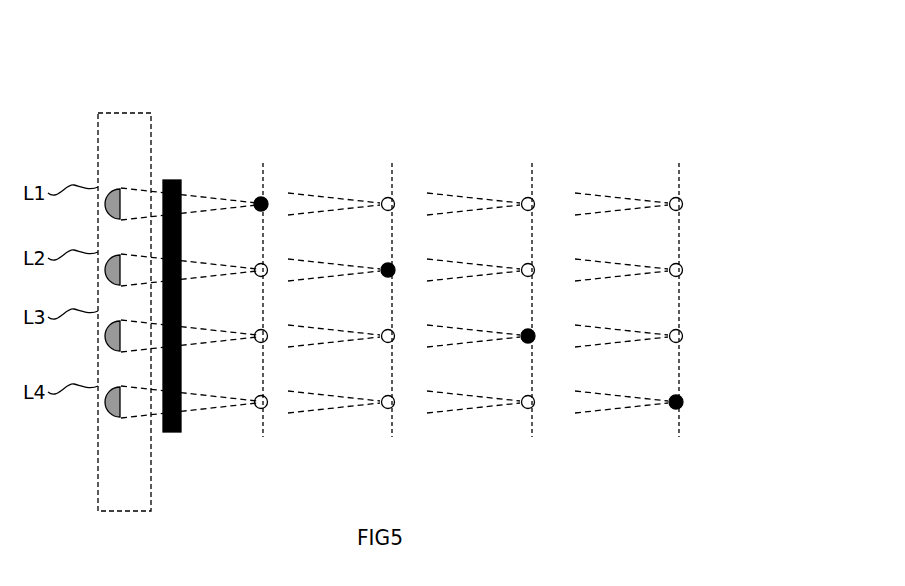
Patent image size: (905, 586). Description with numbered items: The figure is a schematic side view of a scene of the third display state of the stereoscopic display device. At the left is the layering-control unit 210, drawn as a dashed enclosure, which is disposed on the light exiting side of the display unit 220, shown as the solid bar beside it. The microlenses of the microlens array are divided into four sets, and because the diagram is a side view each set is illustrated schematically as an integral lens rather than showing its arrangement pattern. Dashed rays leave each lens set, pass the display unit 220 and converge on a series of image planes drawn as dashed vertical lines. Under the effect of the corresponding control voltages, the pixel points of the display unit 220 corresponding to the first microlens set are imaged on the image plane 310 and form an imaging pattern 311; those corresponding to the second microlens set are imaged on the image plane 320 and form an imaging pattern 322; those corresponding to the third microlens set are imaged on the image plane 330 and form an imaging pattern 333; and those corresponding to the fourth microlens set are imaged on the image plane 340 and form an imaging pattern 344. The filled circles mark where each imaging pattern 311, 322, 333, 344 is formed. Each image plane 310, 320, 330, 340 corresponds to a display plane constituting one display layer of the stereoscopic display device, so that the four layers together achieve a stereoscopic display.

The layering-control unit 210 is at (123, 113).
The display unit 220 is at (181, 138).
The image plane 310 is at (271, 123).
The imaging pattern 311 is at (268, 203).
The image plane 320 is at (405, 123).
The imaging pattern 322 is at (395, 269).
The image plane 330 is at (519, 123).
The imaging pattern 333 is at (535, 336).
The image plane 340 is at (648, 122).
The imaging pattern 344 is at (683, 402).